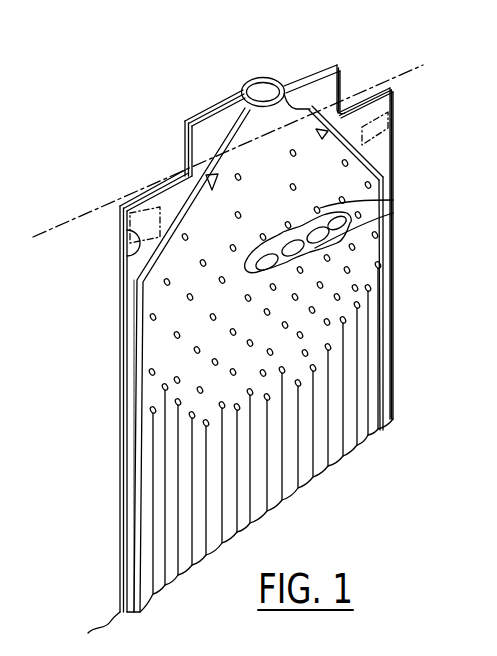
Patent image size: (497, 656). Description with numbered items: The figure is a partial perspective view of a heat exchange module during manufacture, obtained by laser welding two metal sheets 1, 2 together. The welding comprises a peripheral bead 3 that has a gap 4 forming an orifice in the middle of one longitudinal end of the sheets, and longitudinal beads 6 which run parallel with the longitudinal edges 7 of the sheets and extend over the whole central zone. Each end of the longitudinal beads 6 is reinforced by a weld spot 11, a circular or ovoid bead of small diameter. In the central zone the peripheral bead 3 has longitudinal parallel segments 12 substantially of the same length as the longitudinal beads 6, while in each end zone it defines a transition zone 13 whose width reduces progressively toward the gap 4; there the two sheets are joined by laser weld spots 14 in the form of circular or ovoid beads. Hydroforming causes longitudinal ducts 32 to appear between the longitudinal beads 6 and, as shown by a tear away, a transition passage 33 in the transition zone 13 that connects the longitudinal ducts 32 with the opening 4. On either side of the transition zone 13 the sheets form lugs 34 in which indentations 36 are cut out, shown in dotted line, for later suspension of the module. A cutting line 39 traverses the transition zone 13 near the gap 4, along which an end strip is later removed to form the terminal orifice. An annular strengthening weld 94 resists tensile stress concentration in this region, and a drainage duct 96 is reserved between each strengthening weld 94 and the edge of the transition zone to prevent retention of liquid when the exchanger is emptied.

The metal sheet 1 is at (125, 230).
The metal sheet 2 is at (135, 258).
The peripheral bead 3 is at (386, 157).
The gap 4 is at (262, 72).
The longitudinal beads 6 is at (373, 360).
The longitudinal edges 7 is at (395, 248).
The weld spot 11 is at (368, 288).
The longitudinal parallel segments 12 is at (137, 517).
The transition zone 13 is at (300, 170).
The laser weld spots 14 is at (217, 157).
The longitudinal ducts 32 is at (369, 479).
The transition passage 33 is at (393, 206).
The lugs 34 is at (127, 308).
The indentations 36 is at (187, 224).
The cutting line 39 is at (50, 217).
The annular strengthening weld 94 is at (218, 183).
The drainage duct 96 is at (185, 173).